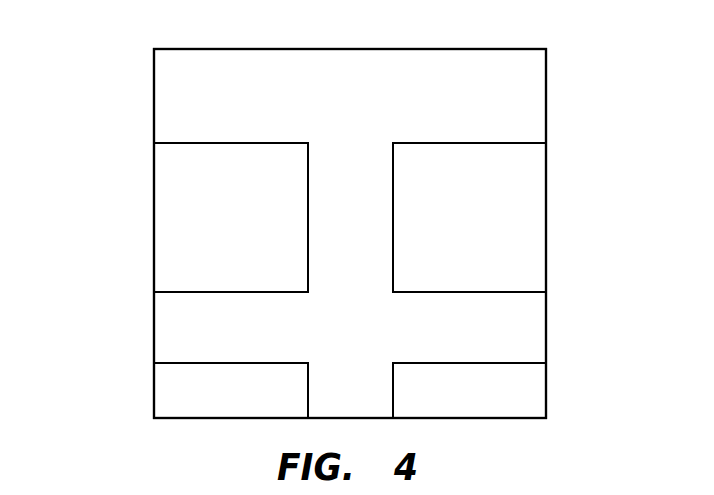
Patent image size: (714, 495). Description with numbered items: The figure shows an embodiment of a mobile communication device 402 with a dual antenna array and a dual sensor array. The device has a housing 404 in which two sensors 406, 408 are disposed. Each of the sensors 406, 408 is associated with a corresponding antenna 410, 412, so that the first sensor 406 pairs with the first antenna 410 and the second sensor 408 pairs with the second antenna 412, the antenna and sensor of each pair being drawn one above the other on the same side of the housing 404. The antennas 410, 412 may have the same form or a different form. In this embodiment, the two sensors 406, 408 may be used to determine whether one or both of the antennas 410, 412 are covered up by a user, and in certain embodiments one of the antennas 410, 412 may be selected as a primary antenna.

The mobile communication device 402 is at (90, 90).
The housing 404 is at (546, 93).
The sensor 406 is at (173, 388).
The sensor 408 is at (528, 388).
The antenna 410 is at (179, 248).
The antenna 412 is at (522, 249).